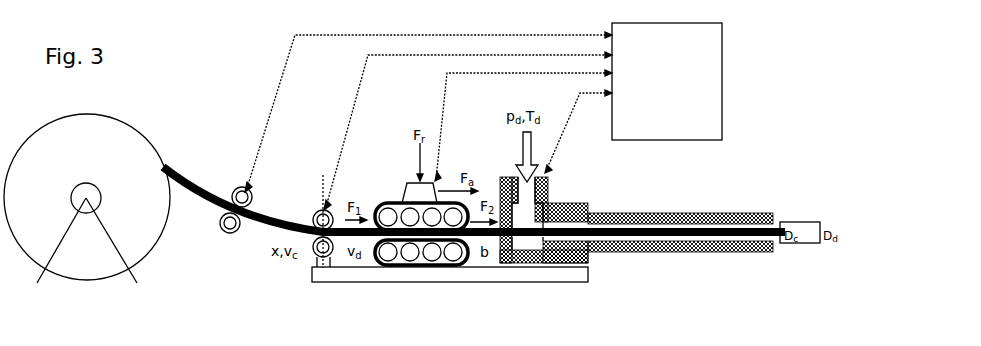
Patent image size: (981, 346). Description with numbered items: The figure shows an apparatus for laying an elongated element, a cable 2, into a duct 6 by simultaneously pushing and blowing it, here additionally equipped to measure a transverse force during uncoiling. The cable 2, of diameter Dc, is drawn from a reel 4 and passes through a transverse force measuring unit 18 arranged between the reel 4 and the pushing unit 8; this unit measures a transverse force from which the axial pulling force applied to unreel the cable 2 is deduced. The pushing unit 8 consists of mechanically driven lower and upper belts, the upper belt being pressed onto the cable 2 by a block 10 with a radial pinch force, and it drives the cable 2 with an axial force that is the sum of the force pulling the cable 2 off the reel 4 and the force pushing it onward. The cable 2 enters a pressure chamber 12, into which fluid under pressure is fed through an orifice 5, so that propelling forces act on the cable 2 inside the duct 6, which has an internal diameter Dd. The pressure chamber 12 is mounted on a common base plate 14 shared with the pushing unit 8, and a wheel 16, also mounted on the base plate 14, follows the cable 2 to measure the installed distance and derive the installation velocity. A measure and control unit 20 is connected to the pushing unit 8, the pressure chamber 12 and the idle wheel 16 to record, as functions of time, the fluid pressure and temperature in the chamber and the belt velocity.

The cable 2 is at (213, 197).
The reel 4 is at (143, 135).
The orifice 5 is at (522, 182).
The duct 6 is at (678, 213).
The pushing unit 8 is at (393, 192).
The block 10 is at (411, 182).
The pressure chamber 12 is at (577, 197).
The base plate 14 is at (588, 276).
The wheel 16 is at (323, 212).
The transverse force measuring unit 18 is at (247, 188).
The measure and control unit 20 is at (654, 60).